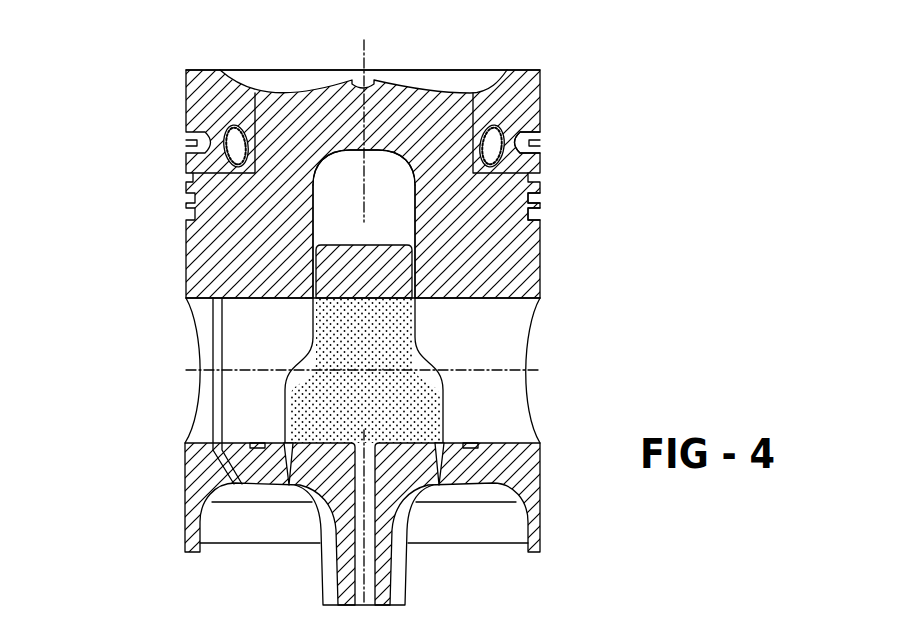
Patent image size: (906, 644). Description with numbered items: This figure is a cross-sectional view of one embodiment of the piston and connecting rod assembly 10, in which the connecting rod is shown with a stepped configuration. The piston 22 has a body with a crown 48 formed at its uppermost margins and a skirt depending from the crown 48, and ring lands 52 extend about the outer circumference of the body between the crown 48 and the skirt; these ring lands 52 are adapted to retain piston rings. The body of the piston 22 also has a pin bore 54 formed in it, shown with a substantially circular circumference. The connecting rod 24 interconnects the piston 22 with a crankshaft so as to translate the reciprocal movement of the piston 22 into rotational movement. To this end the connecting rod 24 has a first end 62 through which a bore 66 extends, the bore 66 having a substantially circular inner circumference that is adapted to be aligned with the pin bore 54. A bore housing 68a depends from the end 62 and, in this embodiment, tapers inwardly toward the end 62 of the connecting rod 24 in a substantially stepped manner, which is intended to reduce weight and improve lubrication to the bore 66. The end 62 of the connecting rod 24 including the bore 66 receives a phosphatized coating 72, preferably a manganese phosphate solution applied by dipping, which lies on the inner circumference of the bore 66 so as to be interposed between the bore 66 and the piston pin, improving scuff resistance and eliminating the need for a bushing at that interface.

The piston and connecting rod assembly 10 is at (152, 137).
The piston 22 is at (566, 80).
The connecting rod 24 is at (407, 582).
The crown 48 is at (456, 71).
The ring lands 52 is at (542, 138).
The pin bore 54 is at (557, 330).
The first end 62 is at (322, 246).
The bore 66 is at (308, 355).
The bore housing 68a is at (292, 486).
The phosphatized coating 72 is at (327, 333).